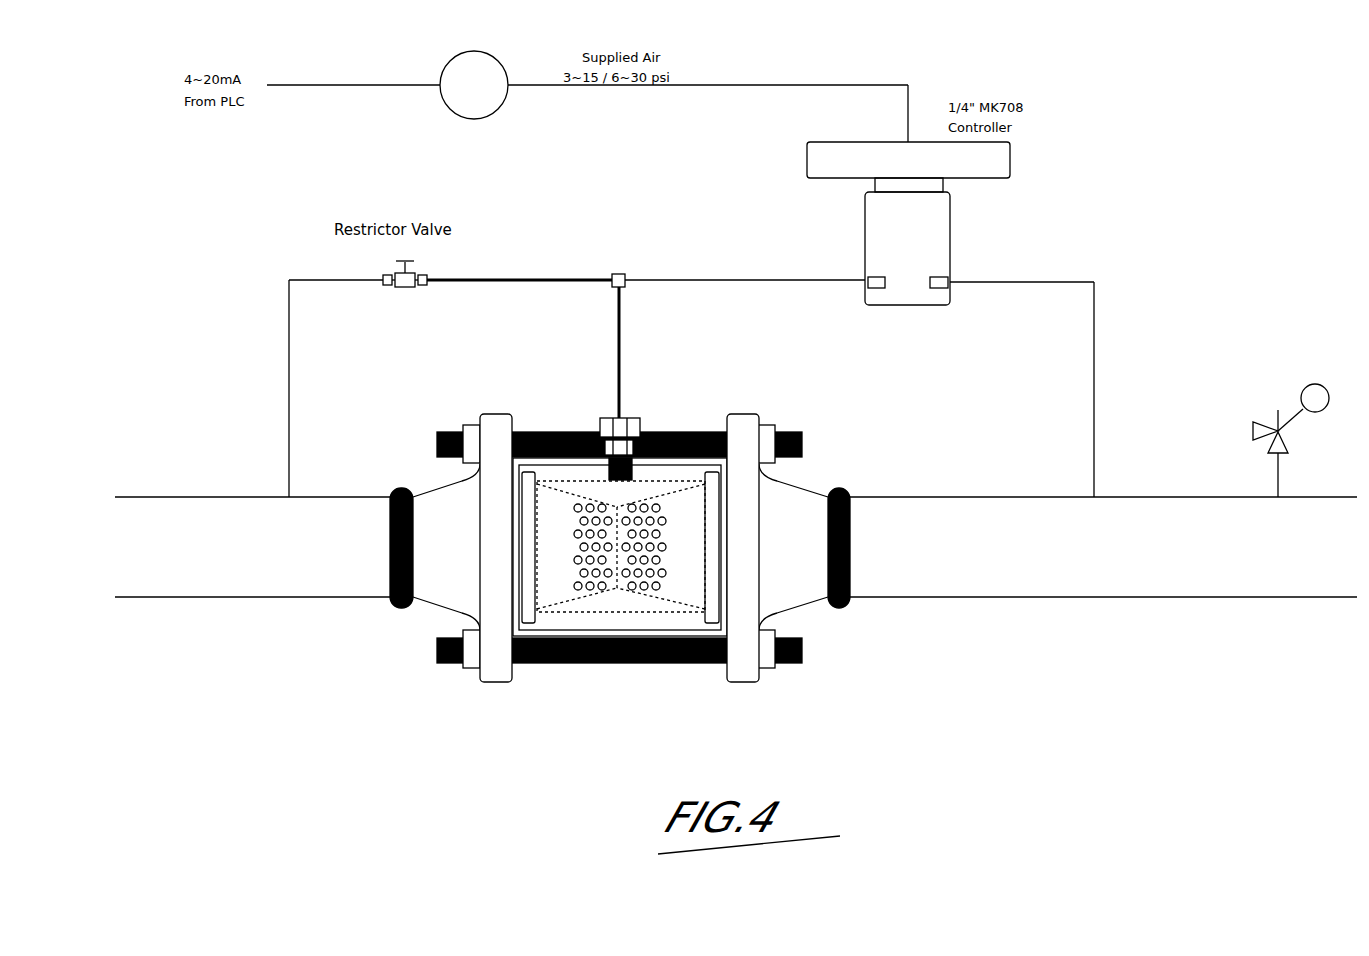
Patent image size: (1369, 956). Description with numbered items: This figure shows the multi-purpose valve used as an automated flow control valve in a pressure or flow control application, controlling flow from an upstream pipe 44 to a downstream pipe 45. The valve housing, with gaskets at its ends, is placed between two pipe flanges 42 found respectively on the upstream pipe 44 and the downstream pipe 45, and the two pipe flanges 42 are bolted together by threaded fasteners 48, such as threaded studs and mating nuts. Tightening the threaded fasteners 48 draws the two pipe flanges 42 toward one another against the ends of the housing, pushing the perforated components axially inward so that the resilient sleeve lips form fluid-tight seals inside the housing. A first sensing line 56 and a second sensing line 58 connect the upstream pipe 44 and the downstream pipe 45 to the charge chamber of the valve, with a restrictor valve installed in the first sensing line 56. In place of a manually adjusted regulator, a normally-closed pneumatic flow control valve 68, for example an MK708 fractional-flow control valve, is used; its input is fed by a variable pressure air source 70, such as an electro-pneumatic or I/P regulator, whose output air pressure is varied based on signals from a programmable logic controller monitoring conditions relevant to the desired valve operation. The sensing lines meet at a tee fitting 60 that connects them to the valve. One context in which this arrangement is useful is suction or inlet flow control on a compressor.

The pipe flanges 42 is at (495, 507).
The upstream pipe 44 is at (308, 578).
The downstream pipe 45 is at (1123, 515).
The threaded fasteners 48 is at (668, 432).
The first sensing line 56 is at (285, 340).
The second sensing line 58 is at (1100, 312).
The tee fitting 60 is at (637, 262).
The pneumatic flow control valve 68 is at (937, 235).
The variable pressure air source 70 is at (475, 62).